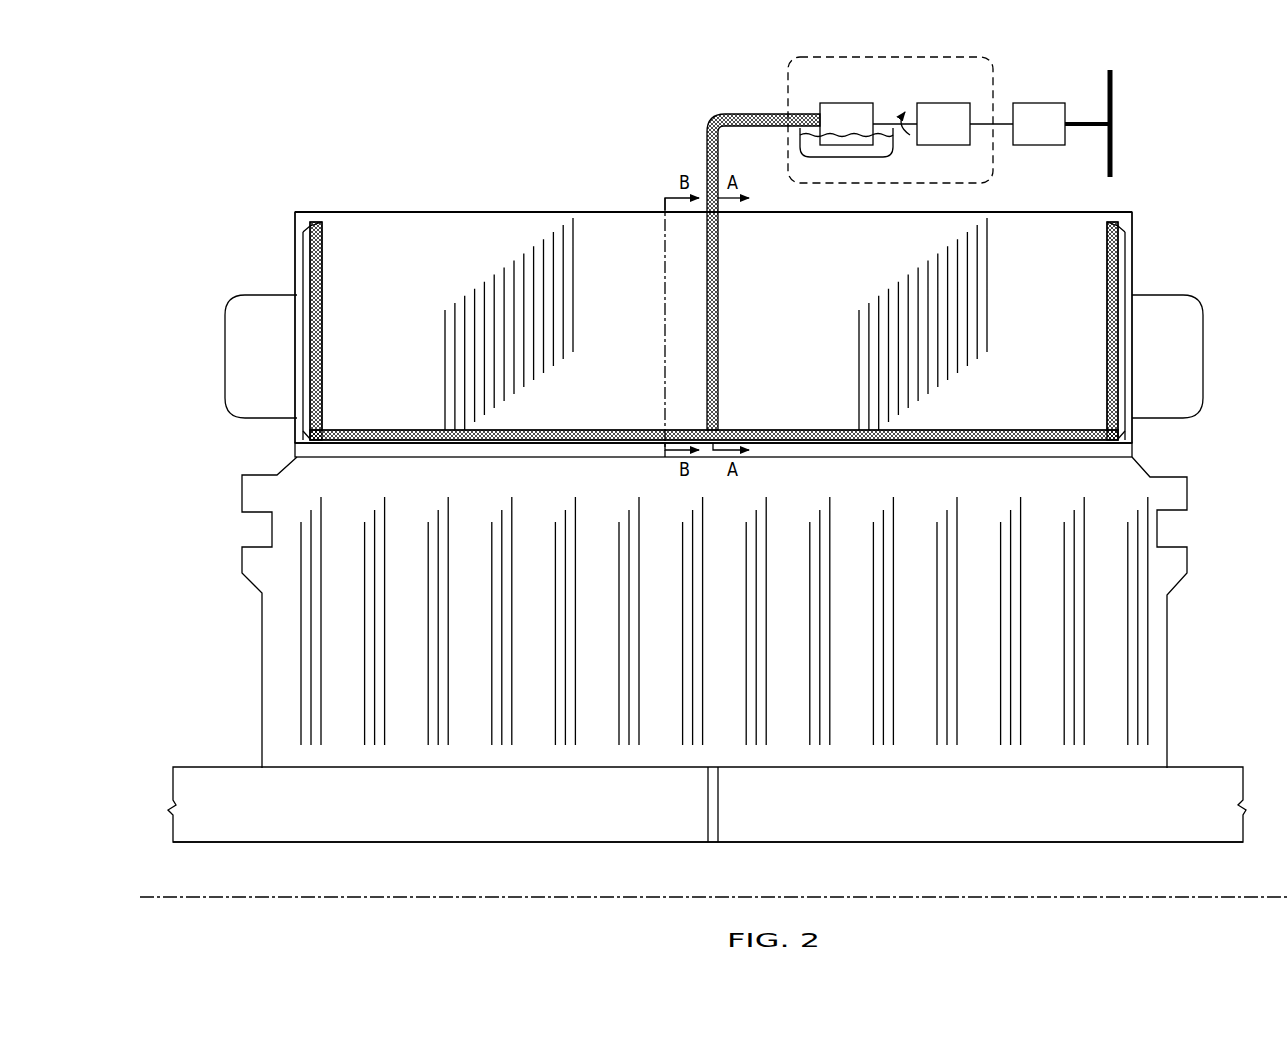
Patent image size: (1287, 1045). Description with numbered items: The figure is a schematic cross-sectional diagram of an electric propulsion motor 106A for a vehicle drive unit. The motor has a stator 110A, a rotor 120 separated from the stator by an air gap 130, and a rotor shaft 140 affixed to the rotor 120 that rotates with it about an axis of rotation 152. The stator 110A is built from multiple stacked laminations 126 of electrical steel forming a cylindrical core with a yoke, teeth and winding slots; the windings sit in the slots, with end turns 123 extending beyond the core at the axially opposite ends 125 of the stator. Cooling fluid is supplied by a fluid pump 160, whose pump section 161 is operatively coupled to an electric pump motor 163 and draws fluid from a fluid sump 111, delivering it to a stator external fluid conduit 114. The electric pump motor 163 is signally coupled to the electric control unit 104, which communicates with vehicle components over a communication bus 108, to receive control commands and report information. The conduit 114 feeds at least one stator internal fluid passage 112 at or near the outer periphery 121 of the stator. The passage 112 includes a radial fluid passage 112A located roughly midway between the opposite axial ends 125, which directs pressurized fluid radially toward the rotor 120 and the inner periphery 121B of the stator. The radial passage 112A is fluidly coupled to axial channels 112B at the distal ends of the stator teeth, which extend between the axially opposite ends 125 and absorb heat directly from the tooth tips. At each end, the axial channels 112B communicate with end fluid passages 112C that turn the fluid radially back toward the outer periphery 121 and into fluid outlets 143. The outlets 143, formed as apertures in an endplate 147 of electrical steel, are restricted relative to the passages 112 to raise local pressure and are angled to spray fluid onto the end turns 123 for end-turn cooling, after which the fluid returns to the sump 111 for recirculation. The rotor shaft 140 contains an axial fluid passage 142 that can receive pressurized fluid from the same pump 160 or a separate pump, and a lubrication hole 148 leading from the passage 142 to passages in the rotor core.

The electric propulsion motor 106A is at (466, 54).
The communication bus 108 is at (1113, 90).
The electric control unit 104 is at (1020, 103).
The stator 110A is at (381, 220).
The fluid sump 111 is at (886, 153).
The stator internal fluid passage 112 is at (322, 273).
The radial fluid passage 112A is at (718, 352).
The axial channels 112B is at (507, 430).
The end fluid passages 112C is at (322, 330).
The stator external fluid conduit 114 is at (718, 113).
The rotor 120 is at (242, 500).
The outer periphery 121 is at (463, 212).
The inner periphery 121B is at (1110, 443).
The end turns 123 is at (237, 295).
The axially opposite ends 125 is at (243, 221).
The stacked laminations 126 is at (573, 243).
The air gap 130 is at (300, 451).
The rotor shaft 140 is at (220, 767).
The axial fluid passage 142 is at (183, 874).
The fluid outlets 143 is at (298, 230).
The endplate 147 is at (299, 258).
The lubrication hole 148 is at (712, 840).
The axis of rotation 152 is at (213, 898).
The fluid pump 160 is at (788, 80).
The pump section 161 is at (836, 103).
The electric pump motor 163 is at (926, 103).